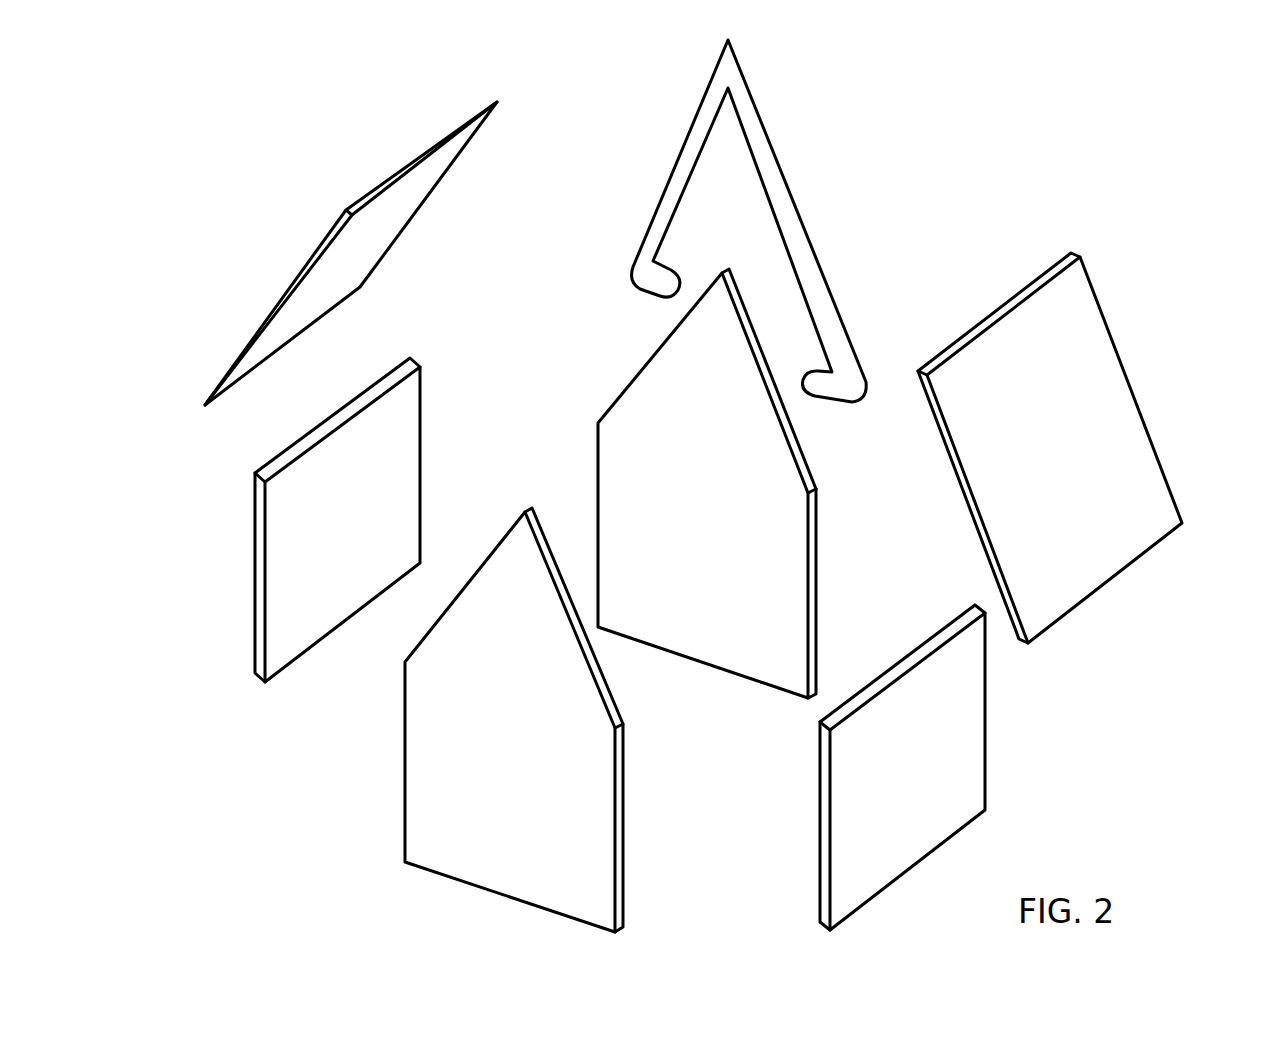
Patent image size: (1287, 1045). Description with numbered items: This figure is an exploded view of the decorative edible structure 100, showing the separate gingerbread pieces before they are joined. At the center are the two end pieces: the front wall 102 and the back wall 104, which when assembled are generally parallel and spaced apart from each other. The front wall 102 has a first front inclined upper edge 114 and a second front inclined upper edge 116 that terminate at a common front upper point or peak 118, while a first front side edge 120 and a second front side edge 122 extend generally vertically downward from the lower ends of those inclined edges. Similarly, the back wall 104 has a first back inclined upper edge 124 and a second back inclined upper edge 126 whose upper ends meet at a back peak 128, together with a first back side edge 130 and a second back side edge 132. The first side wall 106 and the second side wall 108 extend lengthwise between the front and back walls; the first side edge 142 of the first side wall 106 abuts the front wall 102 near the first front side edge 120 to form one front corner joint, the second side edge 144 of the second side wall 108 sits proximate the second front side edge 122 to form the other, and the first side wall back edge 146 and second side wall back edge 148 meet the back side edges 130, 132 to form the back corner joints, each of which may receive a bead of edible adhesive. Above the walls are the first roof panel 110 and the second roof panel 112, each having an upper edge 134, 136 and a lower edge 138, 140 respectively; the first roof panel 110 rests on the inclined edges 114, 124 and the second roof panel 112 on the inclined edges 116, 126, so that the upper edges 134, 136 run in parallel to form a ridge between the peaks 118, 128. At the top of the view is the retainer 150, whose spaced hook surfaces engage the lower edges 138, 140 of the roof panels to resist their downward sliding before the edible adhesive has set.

The decorative edible structure 100 is at (1057, 127).
The front wall 102 is at (445, 745).
The back wall 104 is at (738, 605).
The first side wall 106 is at (945, 795).
The second side wall 108 is at (290, 565).
The first roof panel 110 is at (1080, 392).
The second roof panel 112 is at (362, 243).
The first front inclined upper edge 114 is at (597, 650).
The second front inclined upper edge 116 is at (460, 592).
The front upper point or peak 118 is at (522, 506).
The first front side edge 120 is at (624, 826).
The second front side edge 122 is at (405, 718).
The first back inclined upper edge 124 is at (781, 420).
The second back inclined upper edge 126 is at (680, 322).
The back peak 128 is at (722, 269).
The first back side edge 130 is at (810, 524).
The second back side edge 132 is at (598, 459).
The upper edge 134 is at (1068, 259).
The upper edge 136 is at (365, 196).
The lower edge 138 is at (1176, 540).
The lower edge 140 is at (207, 401).
The first side edge 142 is at (820, 792).
The second side edge 144 is at (263, 667).
The first side wall back edge 146 is at (985, 723).
The second side wall back edge 148 is at (420, 380).
The retainer 150 is at (783, 170).